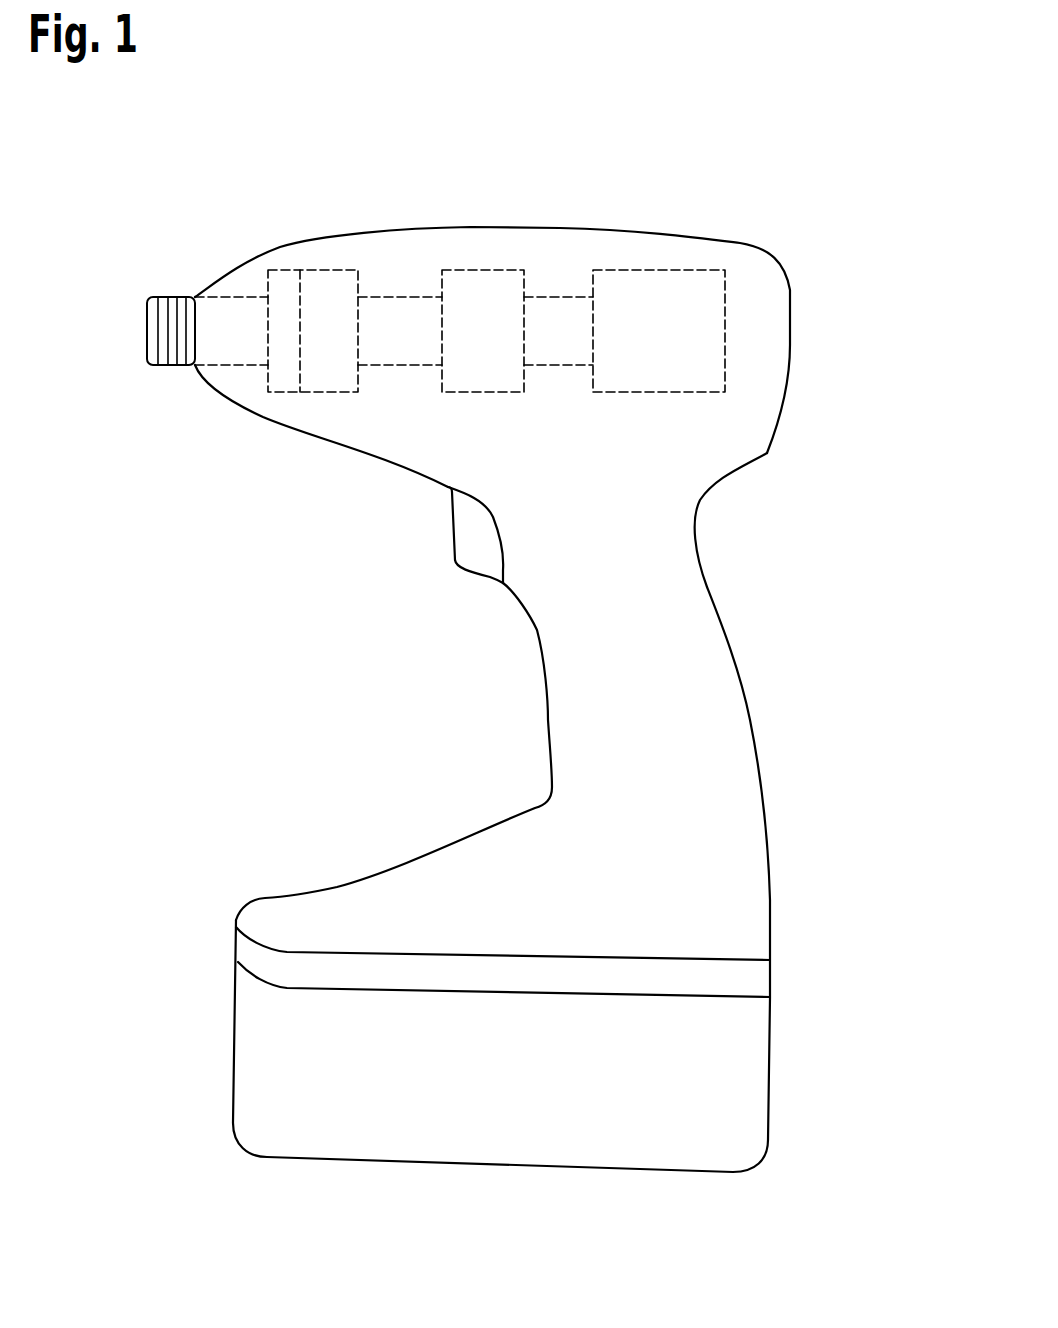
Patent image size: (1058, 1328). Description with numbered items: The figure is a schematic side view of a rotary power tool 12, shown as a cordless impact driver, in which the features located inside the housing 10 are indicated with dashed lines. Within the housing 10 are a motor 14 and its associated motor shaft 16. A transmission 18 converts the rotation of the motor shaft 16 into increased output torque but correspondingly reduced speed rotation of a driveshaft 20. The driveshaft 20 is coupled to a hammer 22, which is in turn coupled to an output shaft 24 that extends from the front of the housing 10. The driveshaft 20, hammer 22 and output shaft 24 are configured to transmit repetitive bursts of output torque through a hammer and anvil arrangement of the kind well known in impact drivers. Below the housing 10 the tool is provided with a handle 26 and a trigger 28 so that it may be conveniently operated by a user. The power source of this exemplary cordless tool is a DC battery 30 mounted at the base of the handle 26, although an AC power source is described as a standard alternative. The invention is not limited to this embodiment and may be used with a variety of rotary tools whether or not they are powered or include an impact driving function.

The housing 10 is at (775, 402).
The rotary power tool 12 is at (763, 178).
The motor 14 is at (703, 325).
The motor shaft 16 is at (550, 315).
The transmission 18 is at (483, 297).
The driveshaft 20 is at (390, 307).
The hammer 22 is at (325, 292).
The output shaft 24 is at (235, 312).
The handle 26 is at (720, 687).
The trigger 28 is at (465, 540).
The DC battery 30 is at (743, 1083).